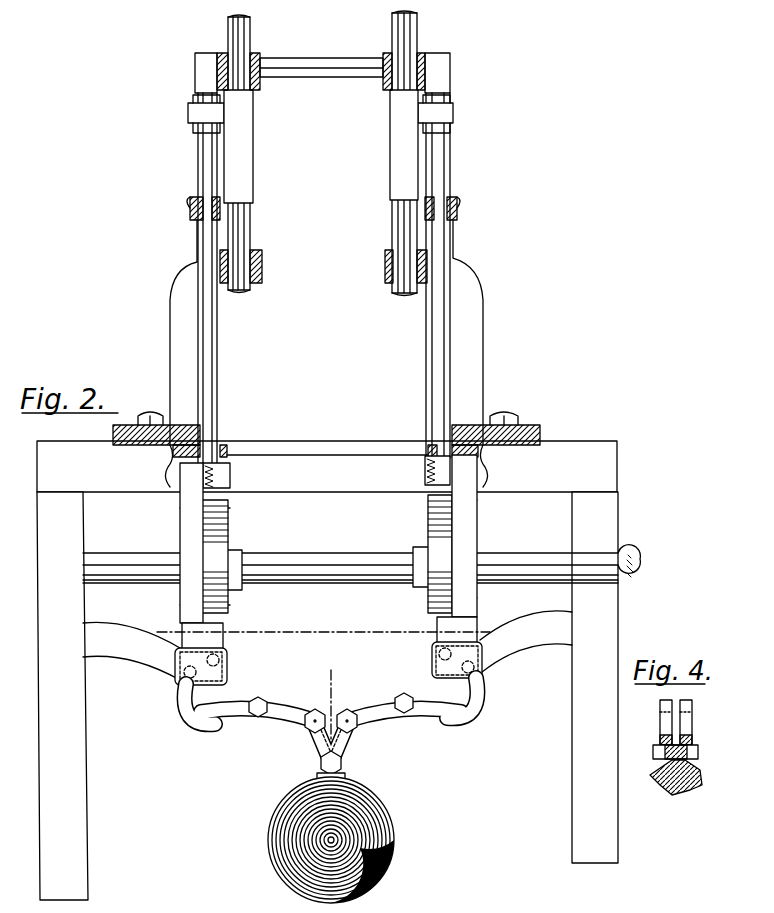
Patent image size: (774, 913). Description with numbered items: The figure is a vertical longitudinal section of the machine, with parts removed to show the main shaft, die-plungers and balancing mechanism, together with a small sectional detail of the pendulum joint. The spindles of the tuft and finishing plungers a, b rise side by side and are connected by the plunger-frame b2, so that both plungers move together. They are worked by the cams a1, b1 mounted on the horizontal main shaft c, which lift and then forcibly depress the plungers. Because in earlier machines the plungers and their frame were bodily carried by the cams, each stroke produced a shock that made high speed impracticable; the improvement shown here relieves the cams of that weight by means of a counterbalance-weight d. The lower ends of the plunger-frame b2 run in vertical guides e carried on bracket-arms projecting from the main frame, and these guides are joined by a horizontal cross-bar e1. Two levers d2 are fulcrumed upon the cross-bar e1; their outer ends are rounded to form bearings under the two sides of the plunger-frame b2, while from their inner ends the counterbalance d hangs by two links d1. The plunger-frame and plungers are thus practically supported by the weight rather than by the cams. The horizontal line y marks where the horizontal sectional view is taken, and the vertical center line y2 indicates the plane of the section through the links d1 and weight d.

In FIG. 2, the tuft plunger spindle a is at (242, 154).
In FIG. 2, the finishing plunger spindle b is at (399, 153).
In FIG. 2, the plunger-frame b2 is at (484, 624).
In FIG. 2, the cam a1 is at (228, 545).
In FIG. 2, the cam b1 is at (430, 530).
In FIG. 2, the main shaft c is at (361, 558).
In FIG. 2, the vertical guides e is at (328, 663).
In FIG. 2, the section line y is at (323, 633).
In FIG. 2, the section line y2 is at (335, 710).
In FIG. 2, the horizontal cross-bar e1 is at (328, 707).
In FIG. 2, the levers d2 is at (331, 701).
In FIG. 2, the links d1 is at (331, 741).
In FIG. 4, the links d1 is at (675, 722).
In FIG. 2, the counterbalance-weight d is at (333, 827).
In FIG. 4, the counterbalance-weight d is at (683, 770).